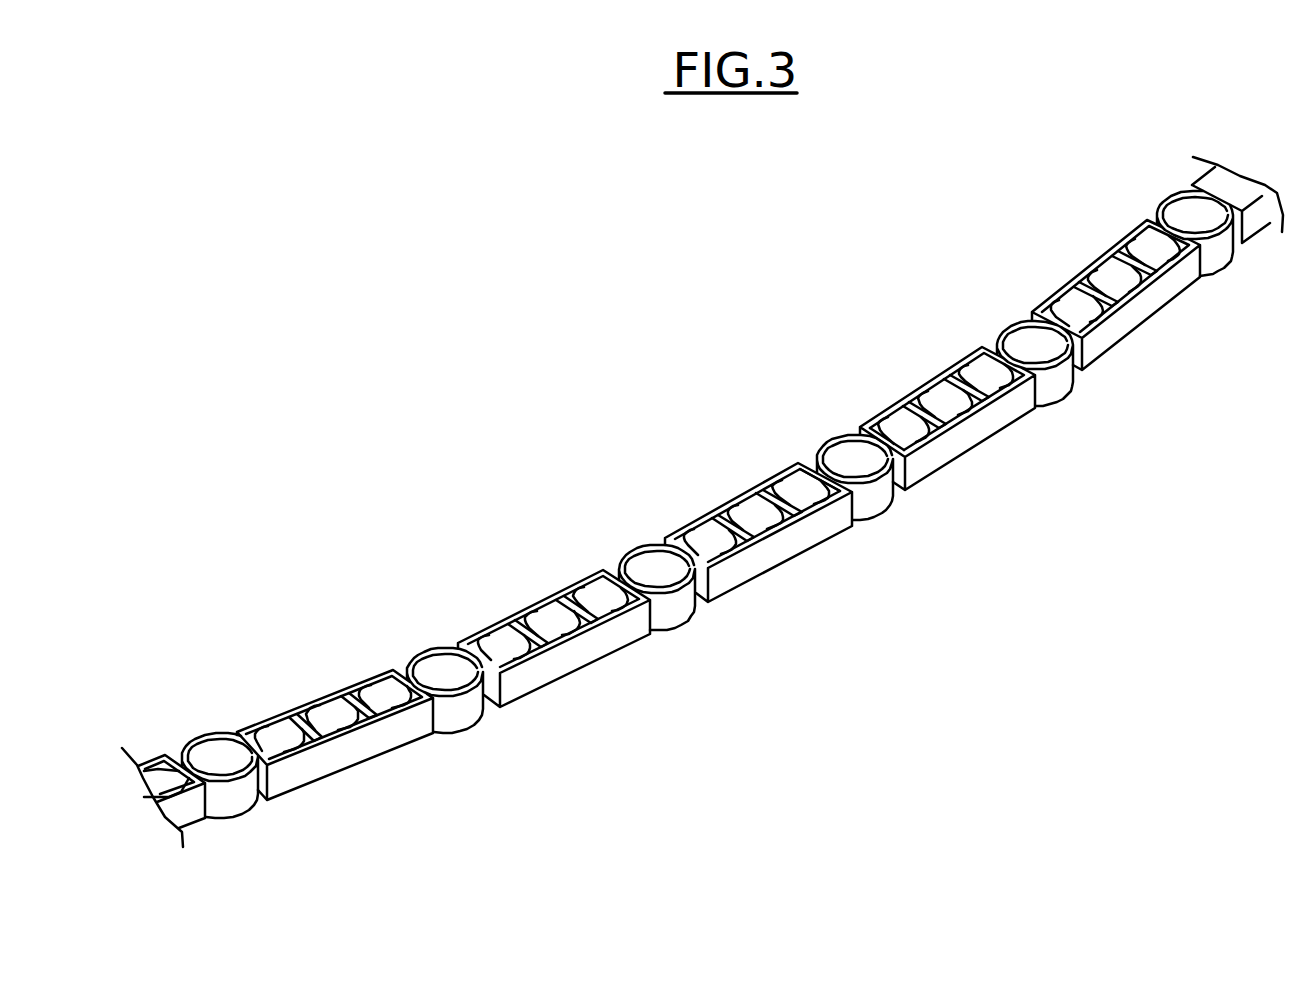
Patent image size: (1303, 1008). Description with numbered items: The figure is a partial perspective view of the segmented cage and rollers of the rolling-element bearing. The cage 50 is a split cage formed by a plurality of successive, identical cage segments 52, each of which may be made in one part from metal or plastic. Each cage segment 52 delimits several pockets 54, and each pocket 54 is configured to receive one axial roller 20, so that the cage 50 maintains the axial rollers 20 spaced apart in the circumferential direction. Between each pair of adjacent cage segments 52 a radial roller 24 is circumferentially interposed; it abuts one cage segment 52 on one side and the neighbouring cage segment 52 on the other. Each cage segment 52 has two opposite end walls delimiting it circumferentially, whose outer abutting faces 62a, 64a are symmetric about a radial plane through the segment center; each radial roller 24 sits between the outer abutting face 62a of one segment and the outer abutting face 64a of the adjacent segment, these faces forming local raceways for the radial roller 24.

The axial roller 20 is at (385, 693).
The radial roller 24 is at (235, 793).
The cage 50 is at (655, 672).
The cage segment 52 is at (290, 703).
The pocket 54 is at (545, 605).
The outer abutting face 62a is at (887, 483).
The outer abutting face 64a is at (808, 466).